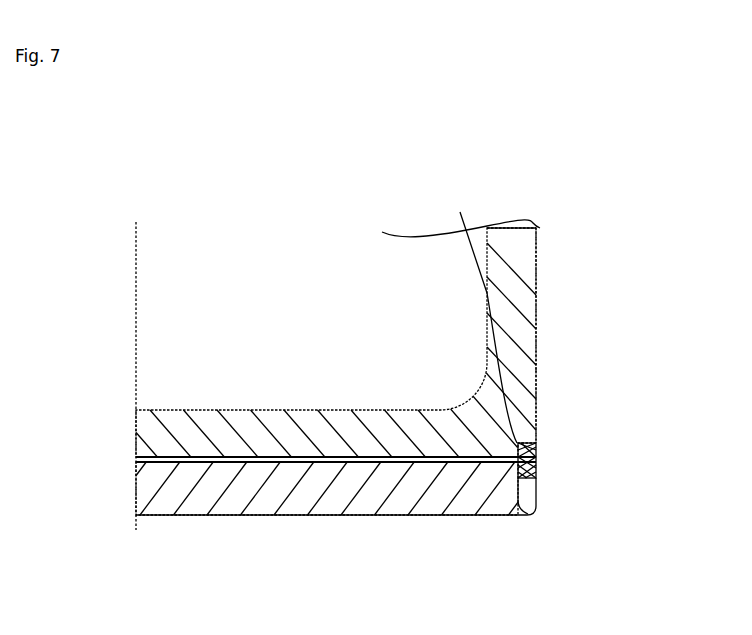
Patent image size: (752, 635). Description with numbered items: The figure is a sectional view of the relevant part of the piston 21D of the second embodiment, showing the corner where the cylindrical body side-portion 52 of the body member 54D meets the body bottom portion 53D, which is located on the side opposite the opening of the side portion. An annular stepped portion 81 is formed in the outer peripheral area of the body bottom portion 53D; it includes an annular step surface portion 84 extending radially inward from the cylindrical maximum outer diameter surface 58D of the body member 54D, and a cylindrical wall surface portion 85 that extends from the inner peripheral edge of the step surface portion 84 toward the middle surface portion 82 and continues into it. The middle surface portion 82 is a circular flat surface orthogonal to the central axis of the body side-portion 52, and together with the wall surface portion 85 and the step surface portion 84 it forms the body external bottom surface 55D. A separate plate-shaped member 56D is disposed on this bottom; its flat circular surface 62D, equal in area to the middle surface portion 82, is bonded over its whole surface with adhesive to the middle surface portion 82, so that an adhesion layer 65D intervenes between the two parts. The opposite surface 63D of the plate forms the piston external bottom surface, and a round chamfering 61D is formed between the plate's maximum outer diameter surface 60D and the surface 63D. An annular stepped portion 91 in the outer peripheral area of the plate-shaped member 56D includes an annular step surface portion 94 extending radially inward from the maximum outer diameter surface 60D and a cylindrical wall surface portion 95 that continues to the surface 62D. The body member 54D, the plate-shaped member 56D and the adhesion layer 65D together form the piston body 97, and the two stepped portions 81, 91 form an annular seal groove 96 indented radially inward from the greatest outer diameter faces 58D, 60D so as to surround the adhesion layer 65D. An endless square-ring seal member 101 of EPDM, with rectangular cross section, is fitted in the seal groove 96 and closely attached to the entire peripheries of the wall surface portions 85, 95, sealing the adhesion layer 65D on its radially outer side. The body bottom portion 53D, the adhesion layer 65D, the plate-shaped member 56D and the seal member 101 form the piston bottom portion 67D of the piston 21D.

The piston 21D is at (561, 185).
The body side-portion 52 is at (525, 279).
The body member 54D is at (539, 257).
The piston body 97 is at (539, 325).
The maximum outer diameter surface 58D is at (537, 370).
The stepped portion 81 is at (461, 319).
The middle surface portion 82 is at (298, 463).
The surface 62D is at (190, 455).
The body bottom portion 53D is at (227, 434).
The surface 63D is at (165, 516).
The adhesion layer 65D is at (261, 463).
The plate-shaped member 56D is at (331, 519).
The body external bottom surface 55D is at (373, 463).
The piston bottom portion 67D is at (418, 497).
The stepped portion 91 is at (516, 480).
The step surface portion 84 is at (537, 443).
The wall surface portion 85 is at (537, 450).
The seal groove 96 is at (537, 460).
The wall surface portion 95 is at (537, 468).
The step surface portion 94 is at (537, 476).
The seal member 101 is at (521, 500).
The maximum outer diameter surface 60D is at (538, 490).
The round chamfering 61D is at (535, 517).